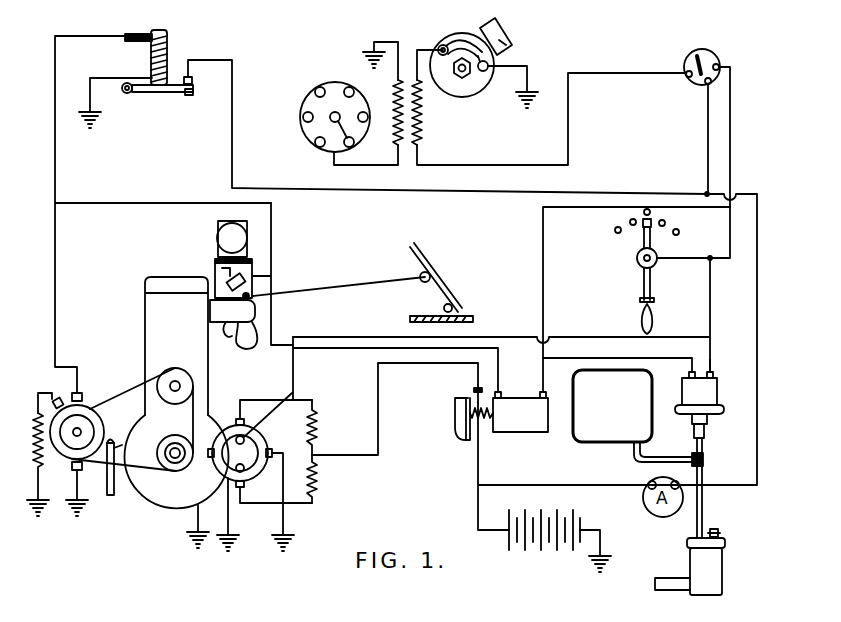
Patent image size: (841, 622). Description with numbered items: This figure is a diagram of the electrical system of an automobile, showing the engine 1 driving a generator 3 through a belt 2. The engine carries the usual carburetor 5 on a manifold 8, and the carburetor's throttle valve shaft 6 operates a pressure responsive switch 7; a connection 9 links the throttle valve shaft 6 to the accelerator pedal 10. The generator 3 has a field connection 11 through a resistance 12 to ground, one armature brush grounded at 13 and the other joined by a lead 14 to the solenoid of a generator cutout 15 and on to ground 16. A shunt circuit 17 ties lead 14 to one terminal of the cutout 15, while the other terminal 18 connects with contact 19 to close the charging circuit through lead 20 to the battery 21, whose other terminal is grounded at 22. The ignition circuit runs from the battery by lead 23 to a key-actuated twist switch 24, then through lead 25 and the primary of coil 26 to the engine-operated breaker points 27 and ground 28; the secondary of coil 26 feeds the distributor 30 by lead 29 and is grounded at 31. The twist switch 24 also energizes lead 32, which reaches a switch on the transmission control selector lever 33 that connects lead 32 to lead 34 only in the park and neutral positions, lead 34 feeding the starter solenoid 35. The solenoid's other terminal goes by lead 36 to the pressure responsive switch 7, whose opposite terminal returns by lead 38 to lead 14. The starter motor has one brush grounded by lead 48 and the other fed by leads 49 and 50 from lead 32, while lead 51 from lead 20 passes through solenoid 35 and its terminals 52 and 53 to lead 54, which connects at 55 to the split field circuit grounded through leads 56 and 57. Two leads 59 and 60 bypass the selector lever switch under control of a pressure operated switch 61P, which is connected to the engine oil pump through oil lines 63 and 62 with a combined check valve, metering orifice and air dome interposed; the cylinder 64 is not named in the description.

The engine 1 is at (145, 308).
The belt 2 is at (128, 378).
The generator 3 is at (86, 393).
The carburetor 5 is at (222, 262).
The throttle valve shaft 6 is at (228, 286).
The pressure responsive switch 7 is at (224, 274).
The manifold 8 is at (232, 326).
The connection 9 is at (338, 284).
The accelerator pedal 10 is at (428, 270).
The field connection 11 is at (50, 388).
The resistance 12 is at (37, 412).
The ground 13 is at (82, 500).
The lead 14 is at (55, 278).
The generator cutout 15 is at (156, 95).
The ground 16 is at (90, 110).
The shunt circuit 17 is at (130, 44).
The terminal 18 is at (187, 96).
The contact 19 is at (193, 80).
The lead 20 is at (232, 146).
The battery 21 is at (545, 548).
The ground 22 is at (598, 554).
The lead 23 is at (706, 150).
The twist switch 24 is at (718, 56).
The lead 25 is at (652, 72).
The coil 26 is at (422, 127).
The breaker points 27 is at (467, 22).
The ground 28 is at (527, 87).
The lead 29 is at (365, 167).
The distributor 30 is at (334, 84).
The ground 31 is at (370, 50).
The lead 32 is at (731, 148).
The transmission control selector lever 33 is at (640, 280).
The lead 34 is at (541, 264).
The starter solenoid 35 is at (522, 426).
The lead 36 is at (272, 313).
The lead 38 is at (271, 242).
The lead 48 is at (232, 534).
The lead 49 is at (294, 396).
The lead 50 is at (710, 318).
The lead 51 is at (477, 460).
The terminal 52 is at (484, 436).
The terminal 53 is at (473, 390).
The lead 54 is at (404, 364).
The split field circuit connection 55 is at (320, 453).
The lead 56 is at (196, 522).
The lead 57 is at (291, 530).
The lead 59 is at (711, 368).
The lead 60 is at (576, 358).
The pressure operated switch 61P is at (712, 414).
The oil line 62 is at (675, 580).
The oil line 63 is at (703, 456).
The brake cylinder 64 is at (724, 572).